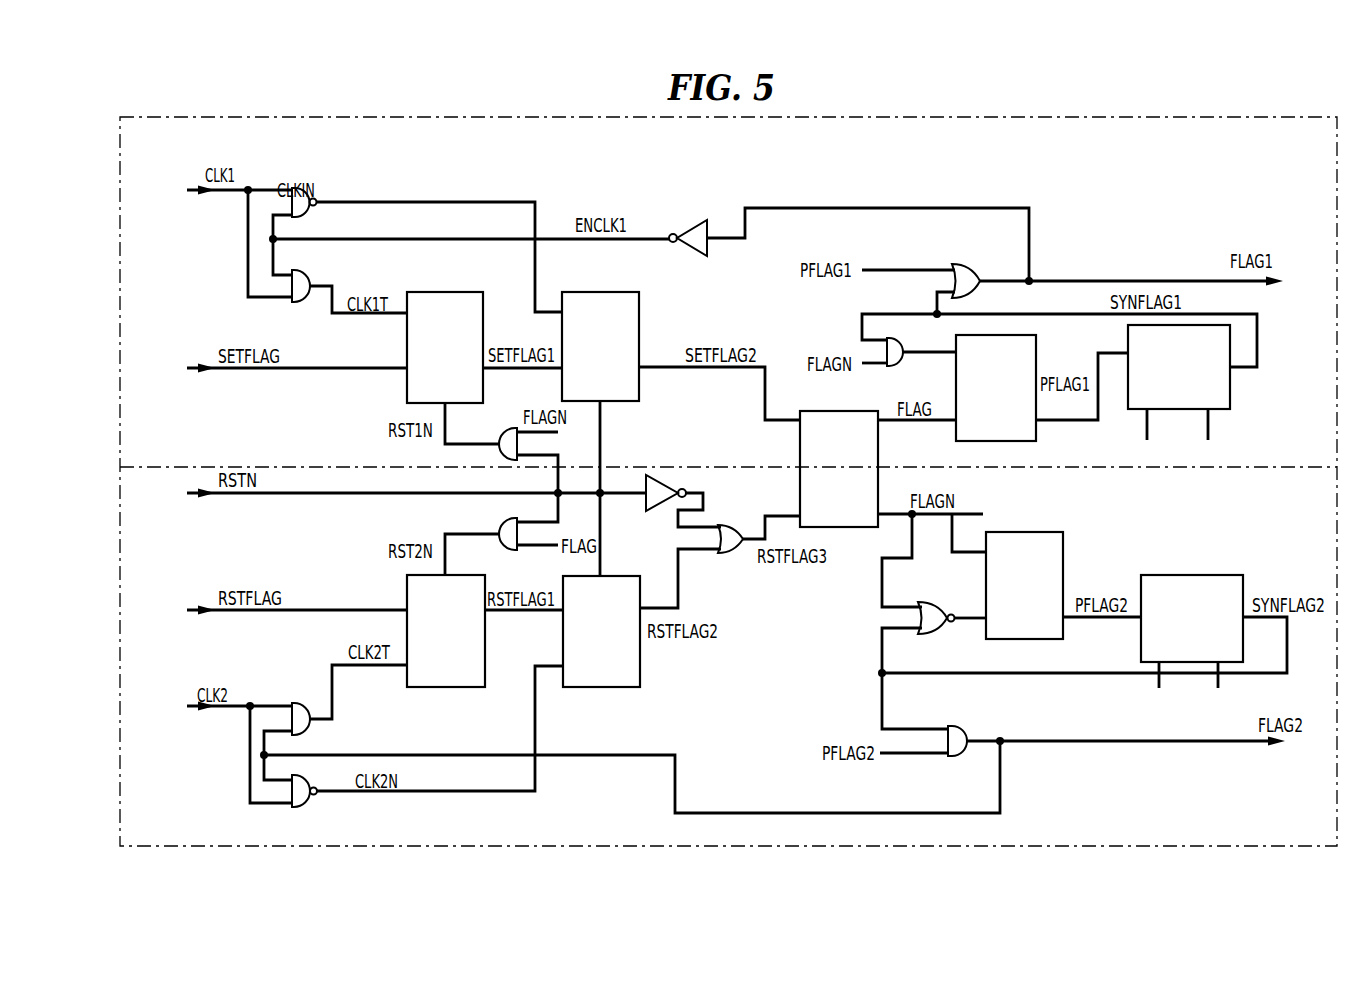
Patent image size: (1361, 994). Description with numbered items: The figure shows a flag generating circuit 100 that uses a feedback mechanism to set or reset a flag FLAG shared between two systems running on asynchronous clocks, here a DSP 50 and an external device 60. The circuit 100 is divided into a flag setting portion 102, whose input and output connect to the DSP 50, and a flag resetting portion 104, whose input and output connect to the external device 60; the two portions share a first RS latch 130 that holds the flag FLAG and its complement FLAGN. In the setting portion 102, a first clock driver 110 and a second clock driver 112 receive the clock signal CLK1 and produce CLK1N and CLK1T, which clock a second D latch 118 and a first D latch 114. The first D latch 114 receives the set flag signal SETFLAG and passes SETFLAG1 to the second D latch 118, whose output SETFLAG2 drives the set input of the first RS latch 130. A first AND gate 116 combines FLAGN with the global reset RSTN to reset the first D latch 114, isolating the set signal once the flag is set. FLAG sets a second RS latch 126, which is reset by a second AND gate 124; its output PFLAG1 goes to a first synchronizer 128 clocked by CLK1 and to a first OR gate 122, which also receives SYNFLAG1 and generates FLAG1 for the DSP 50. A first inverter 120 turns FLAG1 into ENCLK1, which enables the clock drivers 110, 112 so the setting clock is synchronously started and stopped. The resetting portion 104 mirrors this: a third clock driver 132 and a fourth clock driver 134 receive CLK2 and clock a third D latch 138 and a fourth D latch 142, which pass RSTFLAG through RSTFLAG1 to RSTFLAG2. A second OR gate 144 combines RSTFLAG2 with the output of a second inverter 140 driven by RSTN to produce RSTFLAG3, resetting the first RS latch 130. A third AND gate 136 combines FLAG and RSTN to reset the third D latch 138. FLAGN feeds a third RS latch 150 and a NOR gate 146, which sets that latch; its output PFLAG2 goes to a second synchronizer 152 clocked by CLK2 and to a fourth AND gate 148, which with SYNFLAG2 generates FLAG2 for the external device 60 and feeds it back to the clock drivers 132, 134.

The flag generating circuit 100 is at (990, 112).
The flag setting portion 102 is at (128, 275).
The flag resetting portion 104 is at (125, 610).
The DSP 50 is at (732, 281).
The external device 60 is at (721, 707).
The first clock driver 110 is at (296, 187).
The second clock driver 112 is at (305, 300).
The first D latch 114 is at (453, 292).
The first AND gate 116 is at (507, 428).
The second D latch 118 is at (597, 292).
The first inverter 120 is at (688, 222).
The first OR gate 122 is at (963, 265).
The second AND gate 124 is at (903, 363).
The second RS latch 126 is at (1037, 347).
The first synchronizer 128 is at (1232, 388).
The first RS latch 130 is at (799, 453).
The third clock driver 132 is at (308, 724).
The fourth clock driver 134 is at (307, 805).
The third AND gate 136 is at (503, 548).
The third D latch 138 is at (432, 687).
The second inverter 140 is at (658, 476).
The fourth D latch 142 is at (595, 687).
The second OR gate 144 is at (727, 553).
The NOR gate 146 is at (932, 602).
The fourth AND gate 148 is at (958, 757).
The third RS latch 150 is at (1025, 532).
The second synchronizer 152 is at (1197, 575).